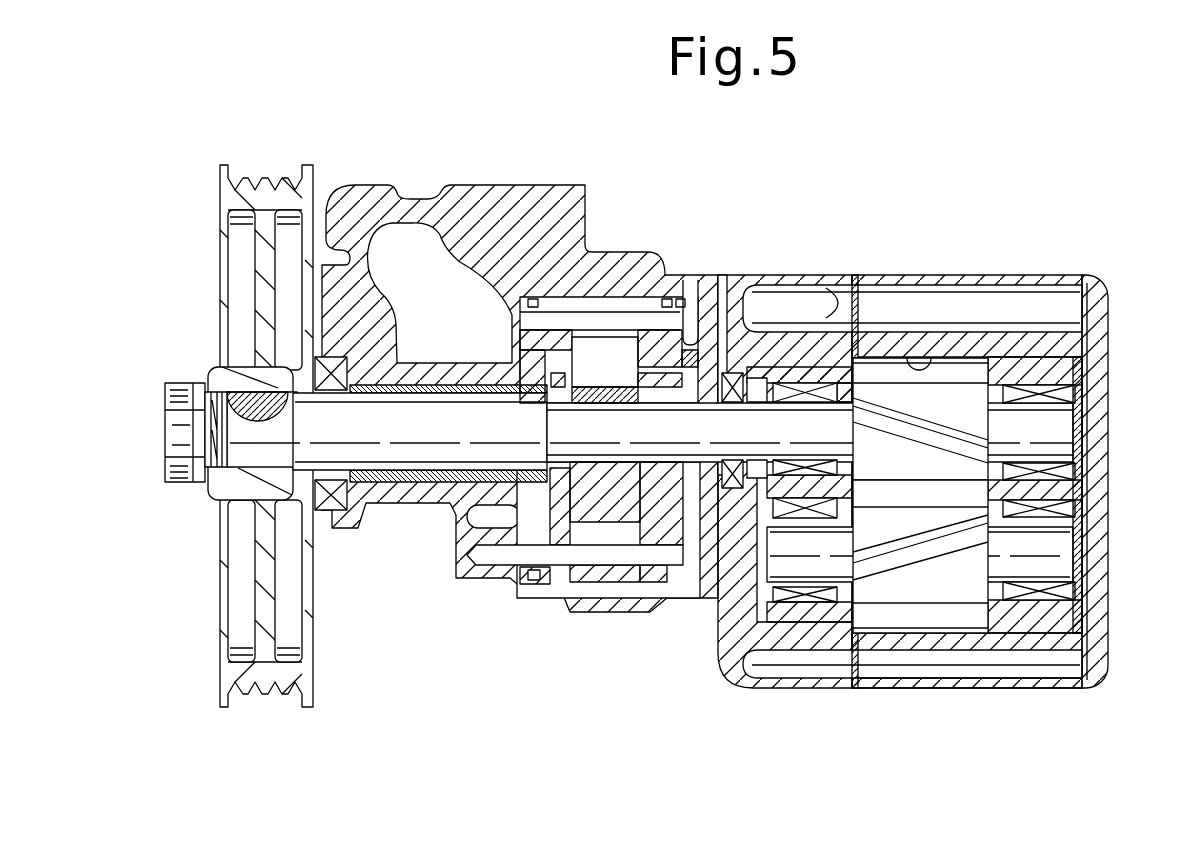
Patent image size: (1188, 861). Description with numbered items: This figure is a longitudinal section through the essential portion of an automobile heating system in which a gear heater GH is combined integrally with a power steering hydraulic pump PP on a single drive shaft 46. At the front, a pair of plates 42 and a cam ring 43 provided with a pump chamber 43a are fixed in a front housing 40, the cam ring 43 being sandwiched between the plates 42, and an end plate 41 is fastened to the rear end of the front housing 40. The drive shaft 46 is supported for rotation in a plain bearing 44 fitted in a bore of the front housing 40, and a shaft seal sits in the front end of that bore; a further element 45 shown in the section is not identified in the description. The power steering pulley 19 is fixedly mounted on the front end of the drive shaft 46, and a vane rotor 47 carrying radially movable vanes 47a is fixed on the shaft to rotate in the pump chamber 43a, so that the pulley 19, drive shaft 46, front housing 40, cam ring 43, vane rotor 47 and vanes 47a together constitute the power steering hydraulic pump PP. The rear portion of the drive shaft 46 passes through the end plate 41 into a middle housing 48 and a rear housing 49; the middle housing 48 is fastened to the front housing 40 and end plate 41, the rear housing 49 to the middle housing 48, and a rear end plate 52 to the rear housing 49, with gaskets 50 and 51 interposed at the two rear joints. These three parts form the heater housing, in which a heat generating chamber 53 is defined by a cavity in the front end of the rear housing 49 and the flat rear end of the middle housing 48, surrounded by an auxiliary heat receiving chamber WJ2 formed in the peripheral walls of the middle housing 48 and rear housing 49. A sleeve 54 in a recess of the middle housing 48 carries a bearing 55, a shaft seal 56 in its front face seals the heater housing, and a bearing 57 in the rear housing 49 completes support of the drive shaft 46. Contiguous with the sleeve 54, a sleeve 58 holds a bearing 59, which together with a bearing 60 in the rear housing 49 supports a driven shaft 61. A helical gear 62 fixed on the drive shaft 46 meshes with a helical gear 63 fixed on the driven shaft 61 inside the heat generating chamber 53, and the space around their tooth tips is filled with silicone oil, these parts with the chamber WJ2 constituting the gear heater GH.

The power steering pulley 19 is at (237, 282).
The front housing 40 is at (497, 193).
The end plate 41 is at (714, 297).
The plates 42 is at (545, 584).
The cam ring 43 is at (607, 582).
The pump chamber 43a is at (575, 332).
The plain bearing 44 is at (423, 482).
The collar 45 is at (333, 510).
The drive shaft 46 is at (440, 442).
The vane rotor 47 is at (613, 518).
The vanes 47a is at (610, 345).
The middle housing 48 is at (813, 279).
The rear housing 49 is at (990, 278).
The gasket 50 is at (853, 688).
The gasket 51 is at (1083, 688).
The rear end plate 52 is at (1108, 447).
The heat generating chamber 53 is at (927, 370).
The sleeve 54 is at (762, 378).
The bearing 55 is at (777, 383).
The shaft seal 56 is at (733, 373).
The bearing 57 is at (1038, 388).
The sleeve 58 is at (778, 622).
The bearing 59 is at (827, 602).
The bearing 60 is at (1040, 600).
The driven shaft 61 is at (823, 565).
The helical gear 62 is at (979, 418).
The helical gear 63 is at (972, 590).
The power steering hydraulic pump PP is at (432, 176).
The gear heater GH is at (1033, 177).
The auxiliary heat receiving chamber WJ2 is at (880, 290).